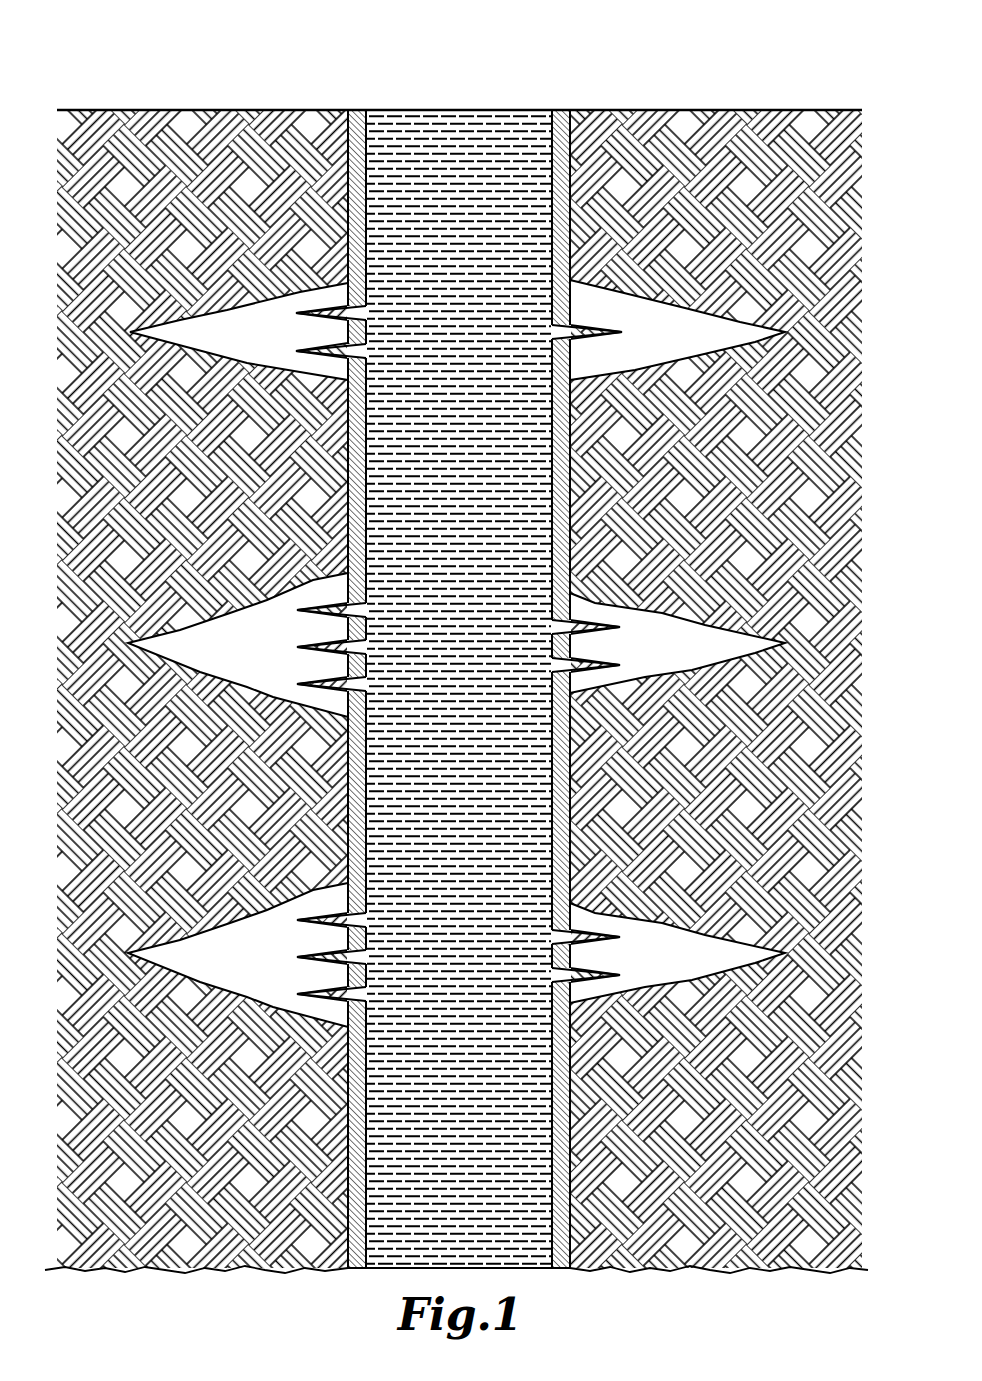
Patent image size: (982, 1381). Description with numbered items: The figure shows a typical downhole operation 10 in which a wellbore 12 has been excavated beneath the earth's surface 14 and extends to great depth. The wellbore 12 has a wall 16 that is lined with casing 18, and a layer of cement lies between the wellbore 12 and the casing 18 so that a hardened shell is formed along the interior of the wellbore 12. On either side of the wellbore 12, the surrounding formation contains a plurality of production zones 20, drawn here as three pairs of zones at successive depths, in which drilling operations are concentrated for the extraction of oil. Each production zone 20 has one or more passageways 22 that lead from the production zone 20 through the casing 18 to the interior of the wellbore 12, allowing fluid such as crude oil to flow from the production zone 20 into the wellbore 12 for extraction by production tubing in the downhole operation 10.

The downhole operation 10 is at (646, 256).
The wellbore 12 is at (403, 104).
The earth's surface 14 is at (170, 108).
The wall 16 is at (344, 210).
The casing 18 is at (368, 394).
The production zone 20 is at (216, 351).
The passageway 22 is at (318, 360).